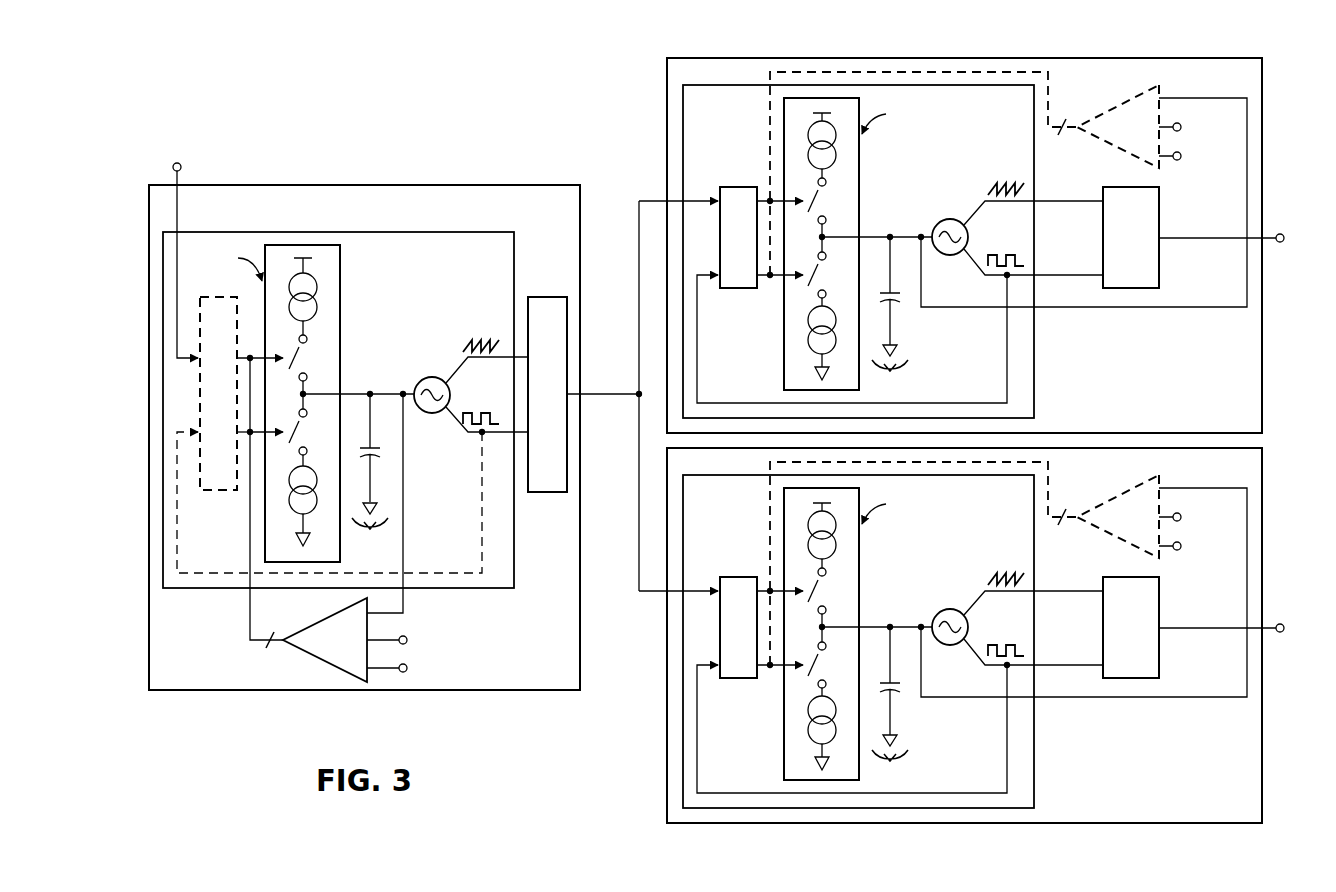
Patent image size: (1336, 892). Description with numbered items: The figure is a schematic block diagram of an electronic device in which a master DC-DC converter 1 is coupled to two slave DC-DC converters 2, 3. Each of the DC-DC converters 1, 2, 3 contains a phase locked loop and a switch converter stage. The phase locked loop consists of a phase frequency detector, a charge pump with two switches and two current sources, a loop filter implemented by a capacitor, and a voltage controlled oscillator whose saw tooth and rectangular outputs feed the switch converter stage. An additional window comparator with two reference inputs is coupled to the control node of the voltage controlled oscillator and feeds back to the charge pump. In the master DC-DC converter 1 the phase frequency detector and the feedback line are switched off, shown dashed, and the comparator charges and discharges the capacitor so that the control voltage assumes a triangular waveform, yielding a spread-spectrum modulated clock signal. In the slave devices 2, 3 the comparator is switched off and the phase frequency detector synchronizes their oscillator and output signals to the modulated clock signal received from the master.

The master DC-DC converter 1 is at (394, 417).
The slave DC-DC converter 2 is at (994, 245).
The slave DC-DC converter 3 is at (994, 635).